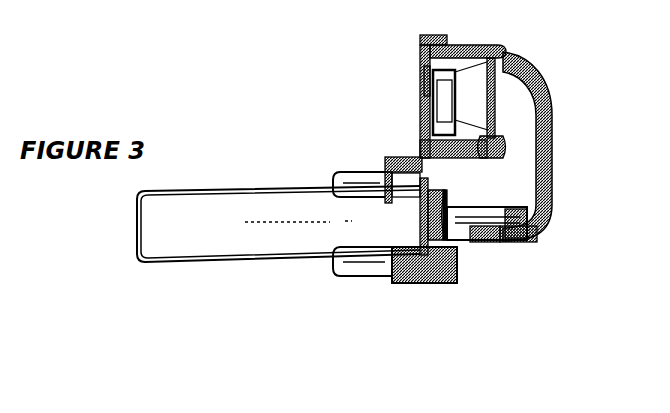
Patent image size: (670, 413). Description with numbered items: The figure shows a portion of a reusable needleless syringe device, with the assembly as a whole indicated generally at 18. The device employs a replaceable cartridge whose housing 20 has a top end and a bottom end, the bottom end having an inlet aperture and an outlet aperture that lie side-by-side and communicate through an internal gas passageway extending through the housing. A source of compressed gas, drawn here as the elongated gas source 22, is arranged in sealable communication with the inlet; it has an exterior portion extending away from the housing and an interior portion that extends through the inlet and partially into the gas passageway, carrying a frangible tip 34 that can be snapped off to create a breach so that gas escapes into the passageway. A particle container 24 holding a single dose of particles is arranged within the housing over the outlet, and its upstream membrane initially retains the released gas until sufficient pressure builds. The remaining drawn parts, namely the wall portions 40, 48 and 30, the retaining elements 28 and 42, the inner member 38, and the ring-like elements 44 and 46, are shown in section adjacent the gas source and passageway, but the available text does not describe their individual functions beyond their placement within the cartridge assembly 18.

The quick connector coupling 18 is at (434, 312).
The cap / housing 20 is at (553, 172).
The gas source 22 is at (335, 205).
The particle container 24 is at (421, 63).
The retainer body 28 is at (458, 258).
The lower wall 30 is at (422, 113).
The frangible tip 34 is at (530, 201).
The valve element 38 is at (498, 102).
The top wall 40 is at (505, 52).
The retainer leg 42 is at (340, 258).
The seal ring 44 is at (490, 250).
The spacer ring 46 is at (492, 250).
The upper wall portion 48 is at (420, 84).